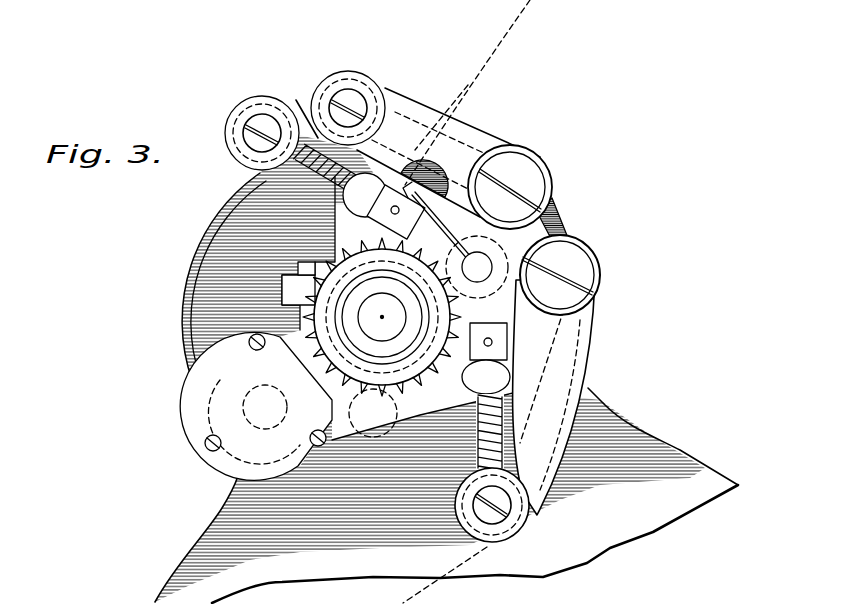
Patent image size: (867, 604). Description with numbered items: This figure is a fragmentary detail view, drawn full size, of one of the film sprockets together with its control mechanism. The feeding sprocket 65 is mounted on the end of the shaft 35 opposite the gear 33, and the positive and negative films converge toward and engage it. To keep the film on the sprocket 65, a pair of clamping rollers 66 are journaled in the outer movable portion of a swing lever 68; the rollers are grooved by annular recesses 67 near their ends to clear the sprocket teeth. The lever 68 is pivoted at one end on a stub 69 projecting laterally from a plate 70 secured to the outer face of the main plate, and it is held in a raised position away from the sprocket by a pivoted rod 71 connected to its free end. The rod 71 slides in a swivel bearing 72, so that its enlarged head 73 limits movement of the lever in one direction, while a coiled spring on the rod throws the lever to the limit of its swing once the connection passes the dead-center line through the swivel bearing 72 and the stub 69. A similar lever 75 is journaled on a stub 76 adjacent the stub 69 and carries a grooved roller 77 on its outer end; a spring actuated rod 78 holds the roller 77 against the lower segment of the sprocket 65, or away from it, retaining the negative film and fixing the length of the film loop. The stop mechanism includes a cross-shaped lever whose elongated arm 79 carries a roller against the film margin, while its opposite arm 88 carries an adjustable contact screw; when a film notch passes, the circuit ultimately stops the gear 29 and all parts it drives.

The gear 29 is at (200, 222).
The gear 33 is at (200, 274).
The shaft 35 is at (382, 317).
The feeding sprocket 65 is at (310, 347).
The clamping rollers 66 is at (366, 76).
The annular recesses 67 is at (348, 72).
The swing lever 68 is at (450, 127).
The stub 69 is at (533, 170).
The plate 70 is at (528, 235).
The pivoted rod 71 is at (290, 188).
The swivel bearing 72 is at (370, 180).
The enlarged head 73 is at (413, 187).
The lever 75 is at (565, 382).
The stub 76 is at (600, 278).
The grooved roller 77 is at (520, 513).
The spring actuated rod 78 is at (500, 432).
The elongated arm 79 is at (296, 100).
The arm 88 is at (256, 406).